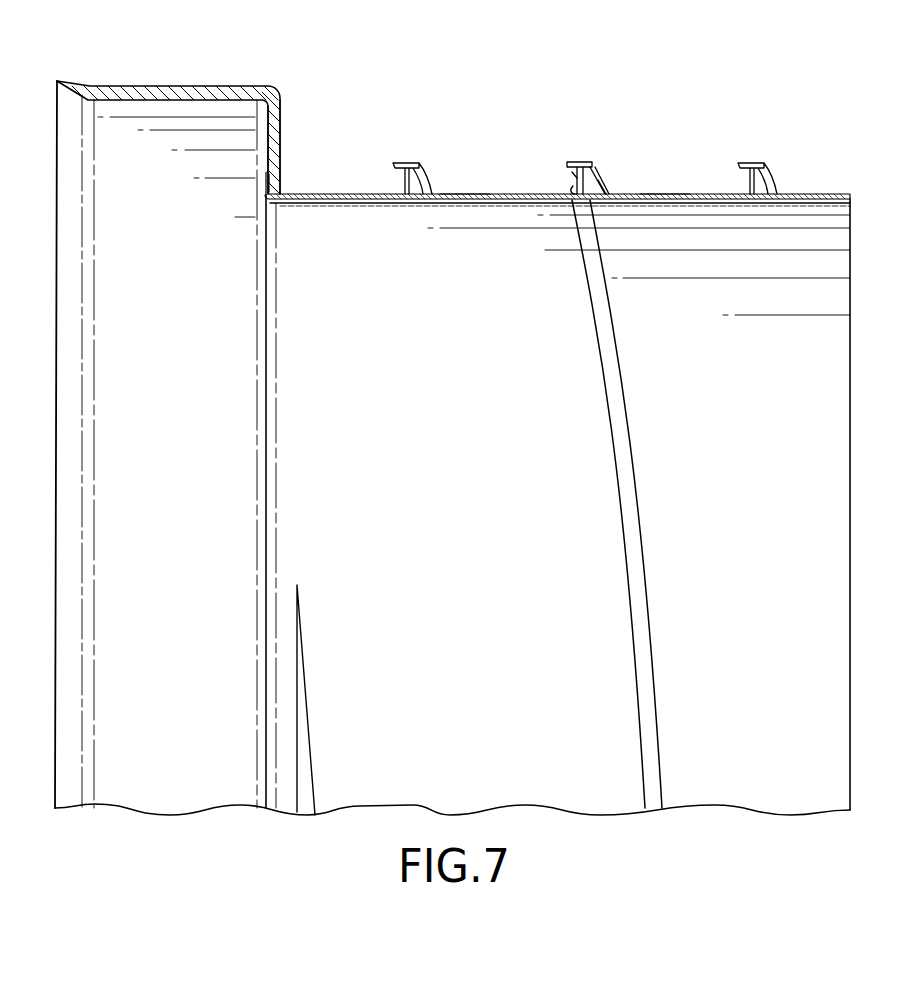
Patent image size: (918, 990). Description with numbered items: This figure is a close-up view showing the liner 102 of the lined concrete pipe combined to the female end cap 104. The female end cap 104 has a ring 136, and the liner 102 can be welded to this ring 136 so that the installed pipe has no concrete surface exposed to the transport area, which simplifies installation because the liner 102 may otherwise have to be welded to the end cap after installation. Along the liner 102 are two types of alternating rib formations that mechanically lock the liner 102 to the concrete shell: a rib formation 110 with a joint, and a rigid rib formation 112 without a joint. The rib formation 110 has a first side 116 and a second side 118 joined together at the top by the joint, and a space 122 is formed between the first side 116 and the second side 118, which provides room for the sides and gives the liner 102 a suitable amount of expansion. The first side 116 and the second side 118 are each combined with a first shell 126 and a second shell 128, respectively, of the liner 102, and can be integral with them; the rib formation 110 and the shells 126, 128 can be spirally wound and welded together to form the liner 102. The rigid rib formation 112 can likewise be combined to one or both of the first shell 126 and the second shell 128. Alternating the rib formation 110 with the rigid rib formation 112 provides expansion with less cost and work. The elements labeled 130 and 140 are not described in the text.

The female end cap 104 is at (183, 87).
The ring 136 is at (273, 138).
The liner 102 is at (315, 194).
The rigid rib formation 112 is at (400, 163).
The first shell 126 is at (465, 194).
The rib formation 110 is at (582, 167).
The space 122 is at (573, 175).
The first side 116 is at (572, 191).
The second side 118 is at (593, 178).
The arm portion 130 is at (603, 191).
The second shell 128 is at (664, 194).
The second panel 140 is at (462, 420).